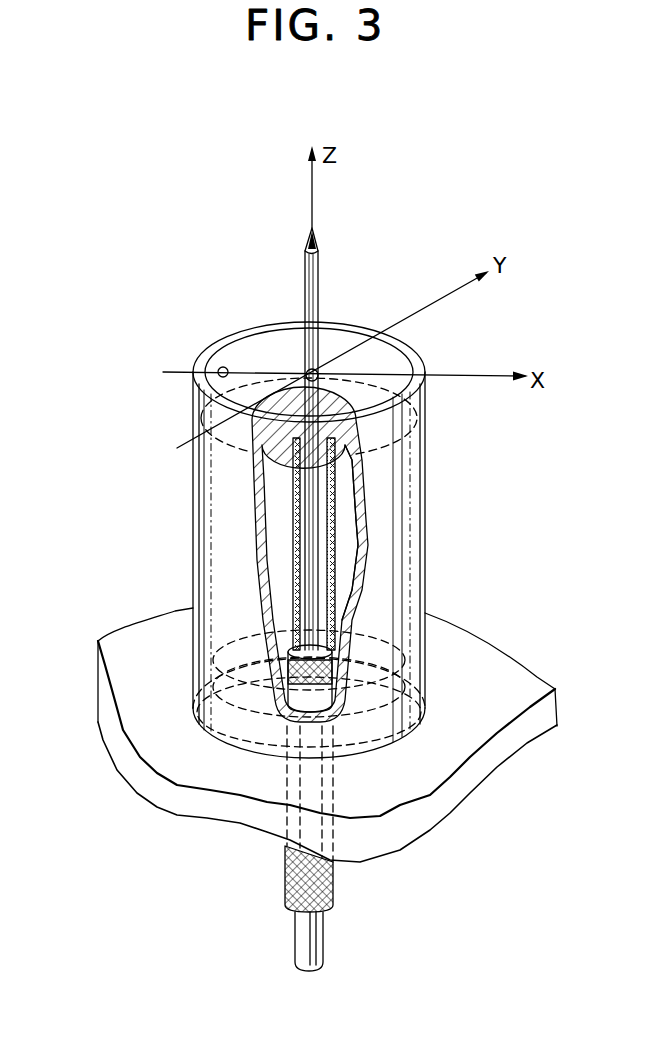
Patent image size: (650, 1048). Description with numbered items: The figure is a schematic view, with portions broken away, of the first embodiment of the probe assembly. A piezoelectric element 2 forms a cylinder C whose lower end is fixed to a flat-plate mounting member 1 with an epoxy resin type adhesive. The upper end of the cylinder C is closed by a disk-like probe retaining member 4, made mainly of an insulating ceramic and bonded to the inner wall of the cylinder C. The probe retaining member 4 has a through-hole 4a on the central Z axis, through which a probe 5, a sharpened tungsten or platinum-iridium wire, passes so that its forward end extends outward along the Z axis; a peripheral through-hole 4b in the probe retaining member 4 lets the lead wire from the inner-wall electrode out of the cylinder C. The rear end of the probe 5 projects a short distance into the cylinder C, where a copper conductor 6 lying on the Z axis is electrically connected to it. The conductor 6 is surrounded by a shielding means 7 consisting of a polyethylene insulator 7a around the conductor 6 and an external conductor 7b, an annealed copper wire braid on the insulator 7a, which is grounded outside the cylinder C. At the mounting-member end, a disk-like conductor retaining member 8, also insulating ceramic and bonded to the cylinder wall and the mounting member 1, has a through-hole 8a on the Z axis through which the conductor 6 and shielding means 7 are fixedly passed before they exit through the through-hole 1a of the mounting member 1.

The mounting member 1 is at (485, 661).
The through-hole 1a is at (337, 732).
The piezoelectric element 2 is at (200, 355).
The probe retaining member 4 is at (343, 335).
The through-hole 4a is at (400, 366).
The through-hole 4b is at (198, 380).
The probe 5 is at (322, 276).
The conductor 6 is at (336, 478).
The shielding means 7 is at (345, 515).
The insulator 7a is at (352, 613).
The external conductor 7b is at (343, 557).
The conductor retaining member 8 is at (277, 630).
The through-hole 8a is at (272, 700).
The cylinder C is at (225, 336).